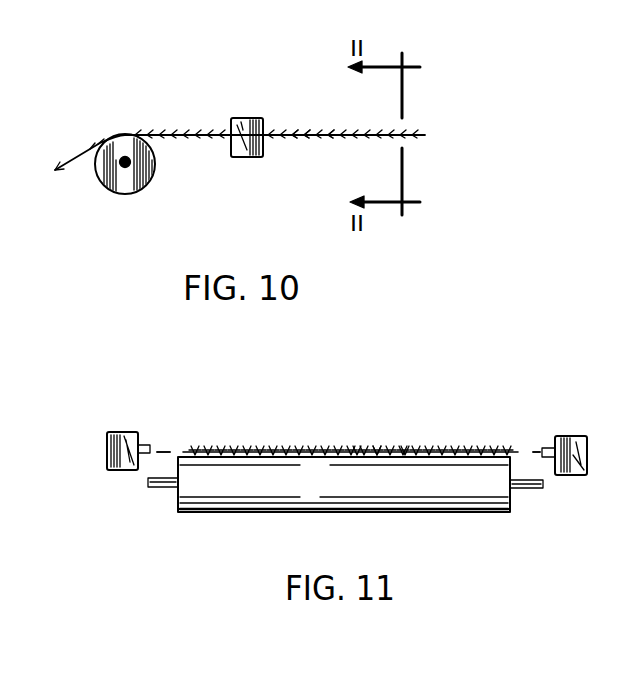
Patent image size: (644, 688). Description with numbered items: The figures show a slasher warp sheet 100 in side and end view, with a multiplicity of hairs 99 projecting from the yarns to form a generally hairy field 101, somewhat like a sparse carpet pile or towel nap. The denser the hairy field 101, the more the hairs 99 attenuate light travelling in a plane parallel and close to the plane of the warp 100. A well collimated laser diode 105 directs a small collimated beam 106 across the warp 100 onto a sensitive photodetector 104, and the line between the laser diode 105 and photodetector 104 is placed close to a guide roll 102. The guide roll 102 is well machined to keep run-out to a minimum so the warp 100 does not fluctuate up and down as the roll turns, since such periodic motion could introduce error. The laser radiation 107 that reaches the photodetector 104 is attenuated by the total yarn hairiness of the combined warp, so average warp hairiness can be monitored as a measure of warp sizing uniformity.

In FIG. 10, the hairs 99 is at (328, 138).
In FIG. 11, the hairs 99 is at (405, 452).
In FIG. 10, the warp sheet 100 is at (165, 132).
In FIG. 11, the warp sheet 100 is at (300, 450).
In FIG. 10, the hairy field 101 is at (311, 127).
In FIG. 10, the guide roll 102 is at (135, 178).
In FIG. 11, the guide roll 102 is at (465, 485).
In FIG. 11, the photodetector 104 is at (587, 445).
In FIG. 10, the laser diode 105 is at (247, 118).
In FIG. 11, the laser diode 105 is at (125, 433).
In FIG. 11, the collimated beam 106 is at (163, 448).
In FIG. 11, the laser radiation 107 is at (533, 445).